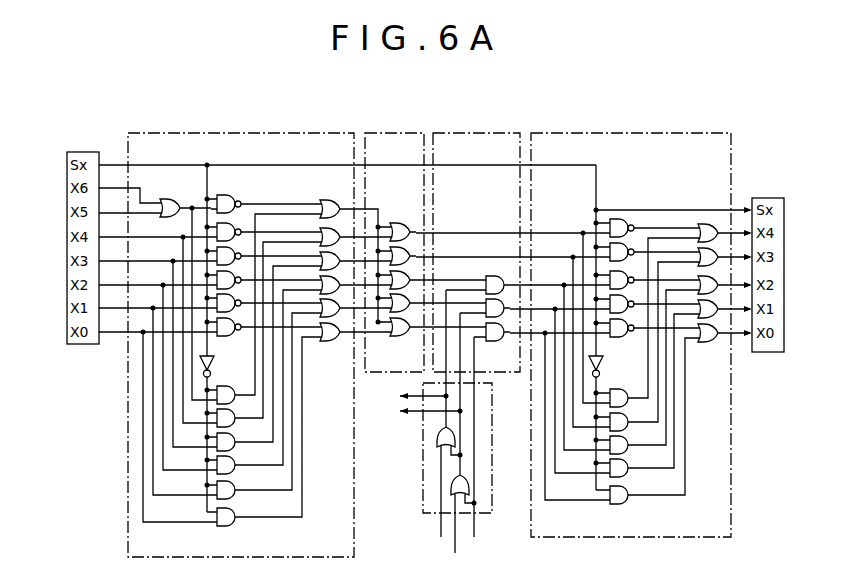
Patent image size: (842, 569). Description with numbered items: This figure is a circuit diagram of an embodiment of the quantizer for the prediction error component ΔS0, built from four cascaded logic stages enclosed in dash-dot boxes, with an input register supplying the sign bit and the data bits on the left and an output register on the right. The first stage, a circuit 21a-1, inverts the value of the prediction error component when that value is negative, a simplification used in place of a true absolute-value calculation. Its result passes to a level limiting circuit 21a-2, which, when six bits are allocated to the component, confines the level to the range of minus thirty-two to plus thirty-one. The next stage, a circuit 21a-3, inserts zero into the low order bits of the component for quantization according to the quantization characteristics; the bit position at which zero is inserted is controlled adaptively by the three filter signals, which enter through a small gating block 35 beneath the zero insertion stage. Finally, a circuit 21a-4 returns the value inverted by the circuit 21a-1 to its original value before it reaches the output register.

The circuit for inverting negative value 21a-1 is at (238, 132).
The level limiting circuit 21a-2 is at (377, 133).
The zero insertion circuit 21a-3 is at (500, 114).
The inversion circuit for negative value 21a-4 is at (717, 114).
The control signal generating circuit 35 is at (430, 429).